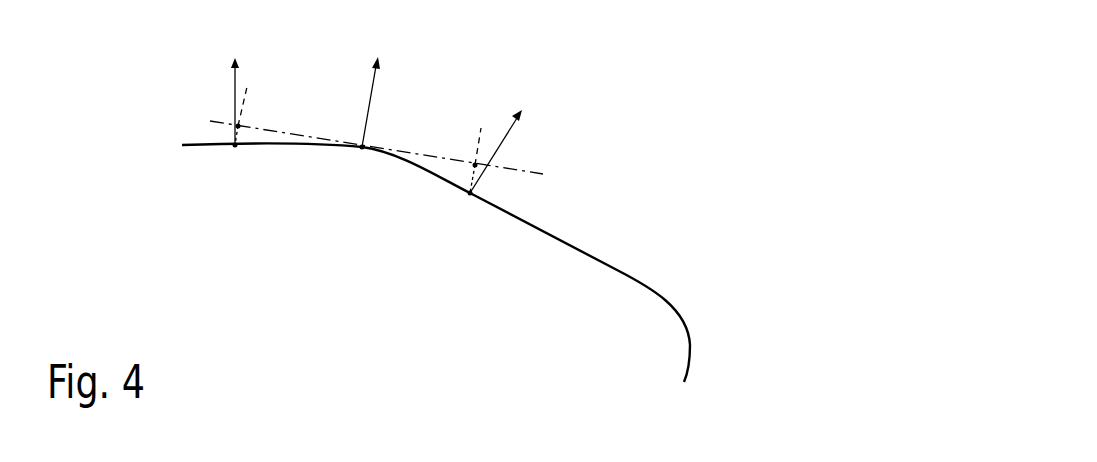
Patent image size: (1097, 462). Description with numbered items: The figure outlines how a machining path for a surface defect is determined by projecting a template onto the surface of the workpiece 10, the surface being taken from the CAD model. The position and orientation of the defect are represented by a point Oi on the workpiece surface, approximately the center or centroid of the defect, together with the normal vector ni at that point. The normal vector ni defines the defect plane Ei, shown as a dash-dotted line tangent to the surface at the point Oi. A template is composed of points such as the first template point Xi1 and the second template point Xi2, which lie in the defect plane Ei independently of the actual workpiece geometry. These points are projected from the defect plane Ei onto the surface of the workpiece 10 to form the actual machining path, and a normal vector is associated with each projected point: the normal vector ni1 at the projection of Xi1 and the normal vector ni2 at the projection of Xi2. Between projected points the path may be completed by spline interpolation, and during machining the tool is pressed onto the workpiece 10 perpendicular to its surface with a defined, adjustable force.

The workpiece 10 is at (617, 270).
The defect plane Ei is at (537, 174).
The normal vector ni is at (448, 88).
The point on the workpiece surface Oi is at (364, 160).
The normal vector at first projected point ni1 is at (222, 94).
The first template point Xi1 is at (244, 133).
The normal vector at second projected point ni2 is at (512, 143).
The second template point Xi2 is at (463, 176).